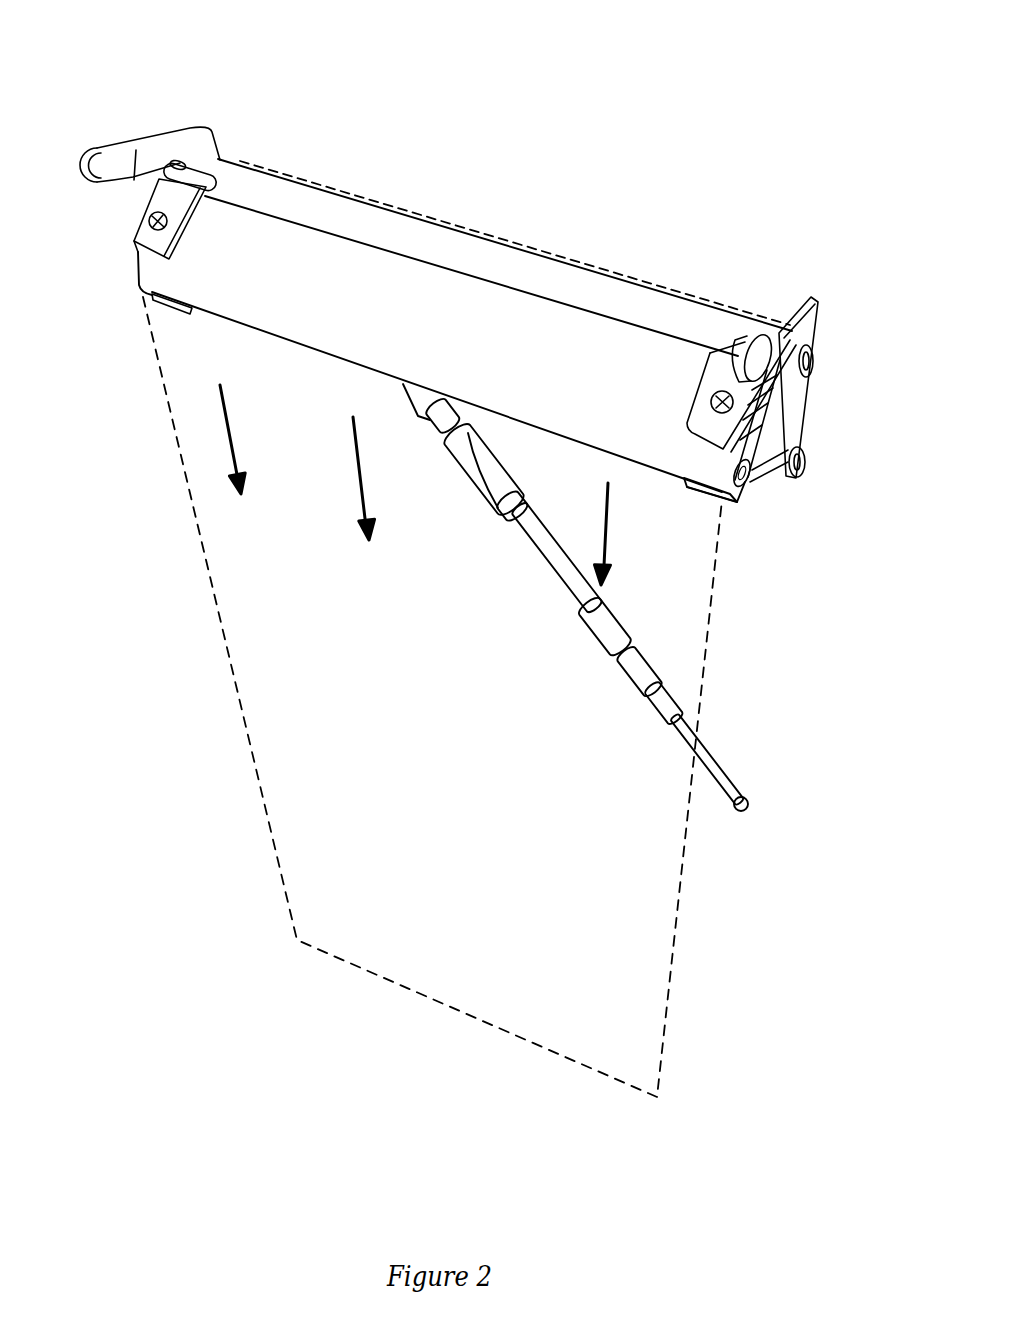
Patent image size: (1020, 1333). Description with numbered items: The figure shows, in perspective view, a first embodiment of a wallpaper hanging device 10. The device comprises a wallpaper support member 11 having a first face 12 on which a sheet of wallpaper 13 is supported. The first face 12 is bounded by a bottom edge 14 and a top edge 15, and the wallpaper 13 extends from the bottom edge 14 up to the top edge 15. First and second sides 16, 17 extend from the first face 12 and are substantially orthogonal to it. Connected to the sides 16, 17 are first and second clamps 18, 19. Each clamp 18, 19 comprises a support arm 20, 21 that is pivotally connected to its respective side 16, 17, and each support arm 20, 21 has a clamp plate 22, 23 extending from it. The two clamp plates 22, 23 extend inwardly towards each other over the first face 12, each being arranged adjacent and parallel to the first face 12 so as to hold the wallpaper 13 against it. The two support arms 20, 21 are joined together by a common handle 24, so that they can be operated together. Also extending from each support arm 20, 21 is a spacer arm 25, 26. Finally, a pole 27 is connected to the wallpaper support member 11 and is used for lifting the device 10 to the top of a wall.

The wallpaper hanging device 10 is at (240, 866).
The wallpaper support member 11 is at (791, 542).
The first face 12 is at (362, 270).
The sheet of wallpaper 13 is at (645, 956).
The bottom edge 14 is at (701, 489).
The top edge 15 is at (566, 256).
The first side 16 is at (137, 252).
The second side 17 is at (770, 425).
The first clamp 18 is at (236, 121).
The second clamp 19 is at (845, 262).
The support arm 20 is at (176, 145).
The support arm 21 is at (810, 325).
The clamp plate 22 is at (148, 214).
The clamp plate 23 is at (725, 368).
The common handle 24 is at (770, 455).
The spacer arm 25 is at (113, 165).
The spacer arm 26 is at (766, 352).
The pole 27 is at (718, 773).